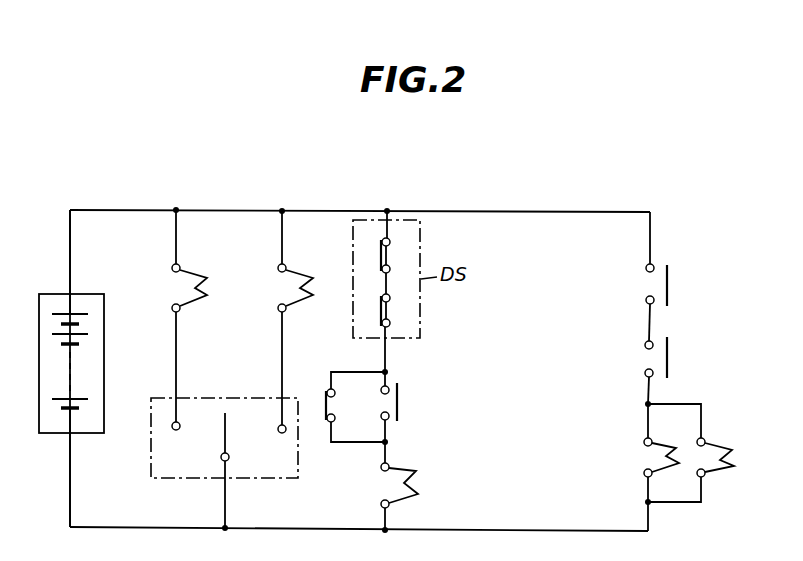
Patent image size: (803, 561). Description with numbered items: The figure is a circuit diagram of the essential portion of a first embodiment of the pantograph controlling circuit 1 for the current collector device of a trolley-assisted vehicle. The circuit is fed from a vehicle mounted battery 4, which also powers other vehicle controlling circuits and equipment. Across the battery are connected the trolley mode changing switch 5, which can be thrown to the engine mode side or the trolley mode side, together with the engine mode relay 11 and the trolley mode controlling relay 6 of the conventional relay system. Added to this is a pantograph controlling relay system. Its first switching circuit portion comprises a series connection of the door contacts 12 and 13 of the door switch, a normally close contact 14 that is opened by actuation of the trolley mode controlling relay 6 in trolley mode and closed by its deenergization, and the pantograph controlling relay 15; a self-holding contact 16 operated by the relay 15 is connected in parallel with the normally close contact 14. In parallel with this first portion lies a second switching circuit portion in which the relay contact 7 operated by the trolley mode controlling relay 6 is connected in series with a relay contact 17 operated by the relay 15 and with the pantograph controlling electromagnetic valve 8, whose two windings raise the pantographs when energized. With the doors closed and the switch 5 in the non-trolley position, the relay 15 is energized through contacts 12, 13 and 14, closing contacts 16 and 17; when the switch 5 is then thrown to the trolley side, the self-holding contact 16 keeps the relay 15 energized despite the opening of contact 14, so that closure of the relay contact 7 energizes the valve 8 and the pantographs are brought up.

The pantograph controlling circuit 1 is at (398, 199).
The vehicle mounted battery 4 is at (49, 293).
The trolley mode changing switch 5 is at (250, 479).
The TOR relay 6 is at (300, 288).
The relay contact 7 is at (669, 287).
The pantograph controlling electromagnetic valve 8 is at (712, 436).
The engine mode relay 11 is at (195, 288).
The door contact 12 is at (380, 255).
The door contact 13 is at (380, 311).
The normally close contact 14 is at (325, 400).
The pantograph controlling relay 15 is at (412, 469).
The self-holding contact 16 is at (400, 396).
The relay contact 17 is at (669, 358).